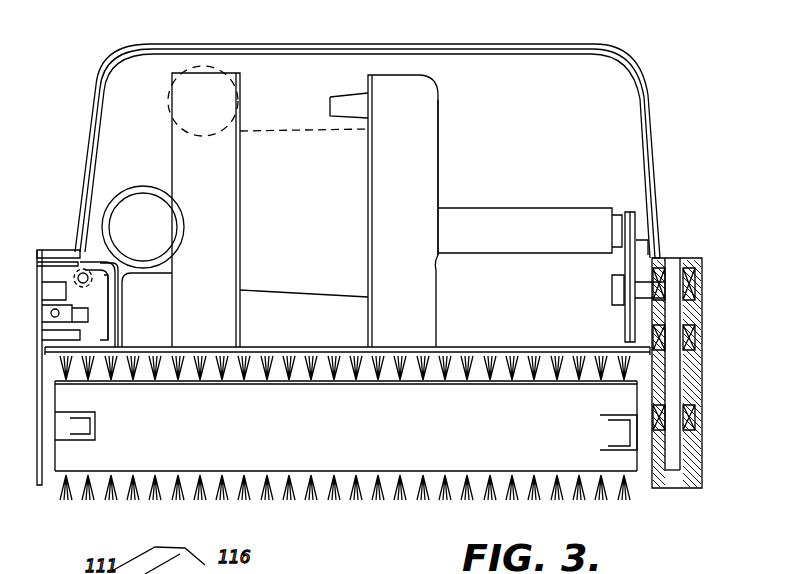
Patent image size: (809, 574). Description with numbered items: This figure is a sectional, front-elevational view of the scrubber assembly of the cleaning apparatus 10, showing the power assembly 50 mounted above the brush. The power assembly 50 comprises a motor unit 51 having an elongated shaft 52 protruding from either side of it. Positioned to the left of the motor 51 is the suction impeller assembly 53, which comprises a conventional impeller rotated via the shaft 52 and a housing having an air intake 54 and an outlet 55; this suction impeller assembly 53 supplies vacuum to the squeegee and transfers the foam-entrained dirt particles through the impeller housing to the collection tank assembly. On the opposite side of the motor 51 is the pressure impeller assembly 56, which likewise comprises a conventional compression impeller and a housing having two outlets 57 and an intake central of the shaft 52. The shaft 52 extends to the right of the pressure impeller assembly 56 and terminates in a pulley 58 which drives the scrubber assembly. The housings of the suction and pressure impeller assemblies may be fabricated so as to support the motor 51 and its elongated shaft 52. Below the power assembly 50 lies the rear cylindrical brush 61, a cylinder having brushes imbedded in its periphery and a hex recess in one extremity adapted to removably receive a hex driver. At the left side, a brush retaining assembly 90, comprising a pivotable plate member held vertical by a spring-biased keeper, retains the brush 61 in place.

The cleaning apparatus 10 is at (670, 195).
The power assembly 50 is at (458, 126).
The motor unit 51 is at (325, 194).
The elongated shaft 52 is at (515, 212).
The suction impeller assembly 53 is at (250, 50).
The air intake 54 is at (156, 238).
The outlet 55 is at (204, 100).
The pressure impeller assembly 56 is at (438, 178).
The outlets 57 is at (333, 100).
The pulley 58 is at (621, 210).
The rear cylindrical brush 61 is at (540, 492).
The brush retaining assembly 90 is at (20, 348).